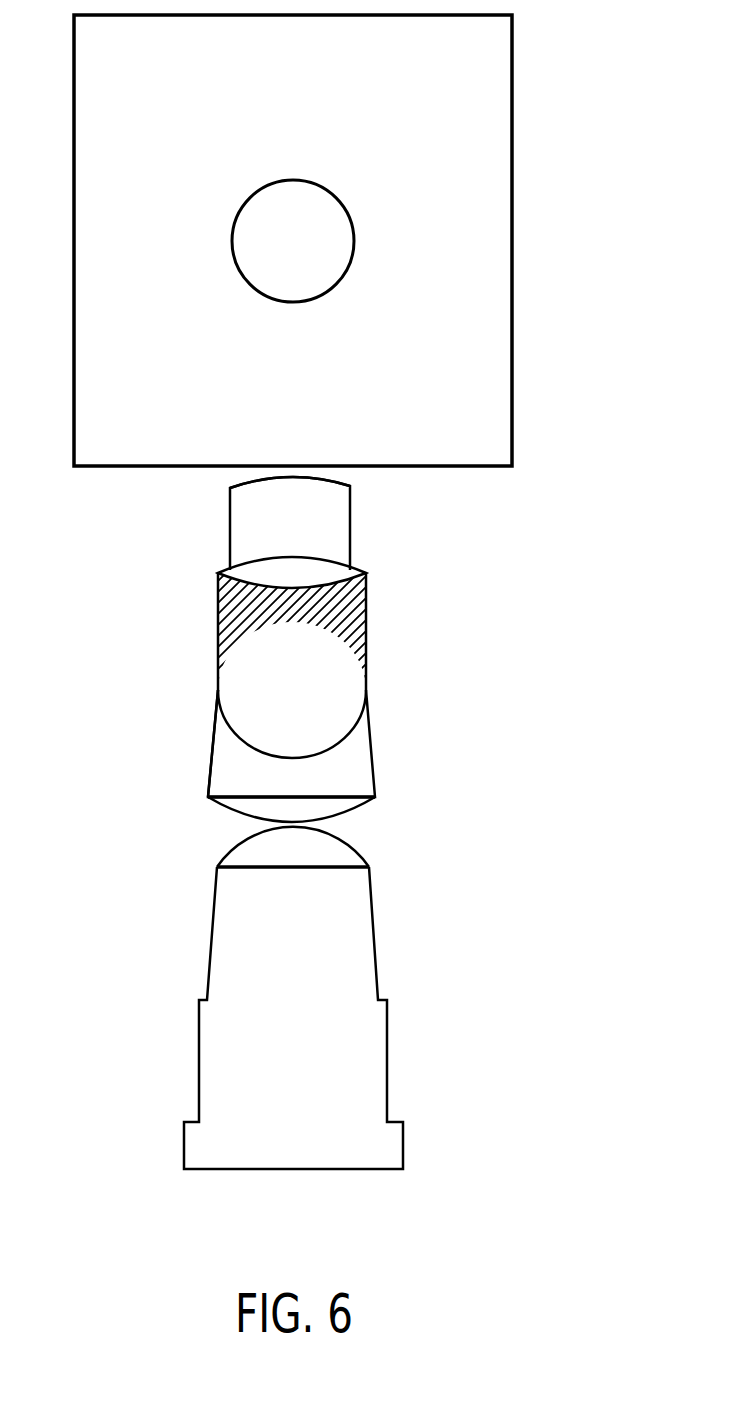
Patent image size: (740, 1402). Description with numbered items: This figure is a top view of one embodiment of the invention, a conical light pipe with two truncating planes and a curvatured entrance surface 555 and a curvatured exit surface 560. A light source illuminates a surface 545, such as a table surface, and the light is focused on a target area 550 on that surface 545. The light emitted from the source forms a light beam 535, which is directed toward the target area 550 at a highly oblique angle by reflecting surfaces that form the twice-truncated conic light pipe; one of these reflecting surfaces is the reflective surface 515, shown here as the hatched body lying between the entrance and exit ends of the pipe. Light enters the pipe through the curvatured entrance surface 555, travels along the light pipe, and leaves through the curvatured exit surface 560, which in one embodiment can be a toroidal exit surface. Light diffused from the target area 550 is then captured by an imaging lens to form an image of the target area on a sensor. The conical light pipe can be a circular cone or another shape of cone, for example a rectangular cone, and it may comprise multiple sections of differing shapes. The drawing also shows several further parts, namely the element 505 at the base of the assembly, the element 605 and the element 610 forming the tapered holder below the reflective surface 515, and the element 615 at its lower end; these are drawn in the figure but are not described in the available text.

The base / housing 505 is at (380, 960).
The reflective surface 515 is at (363, 622).
The light beam 535 is at (350, 513).
The table surface 545 is at (512, 352).
The target area 550 is at (353, 235).
The curvatured entrance surface 555 is at (358, 567).
The curvatured exit surface 560 is at (240, 478).
The tapered holder 605 is at (373, 738).
The side wall of holder 610 is at (213, 738).
The bottom lens surface 615 is at (357, 805).